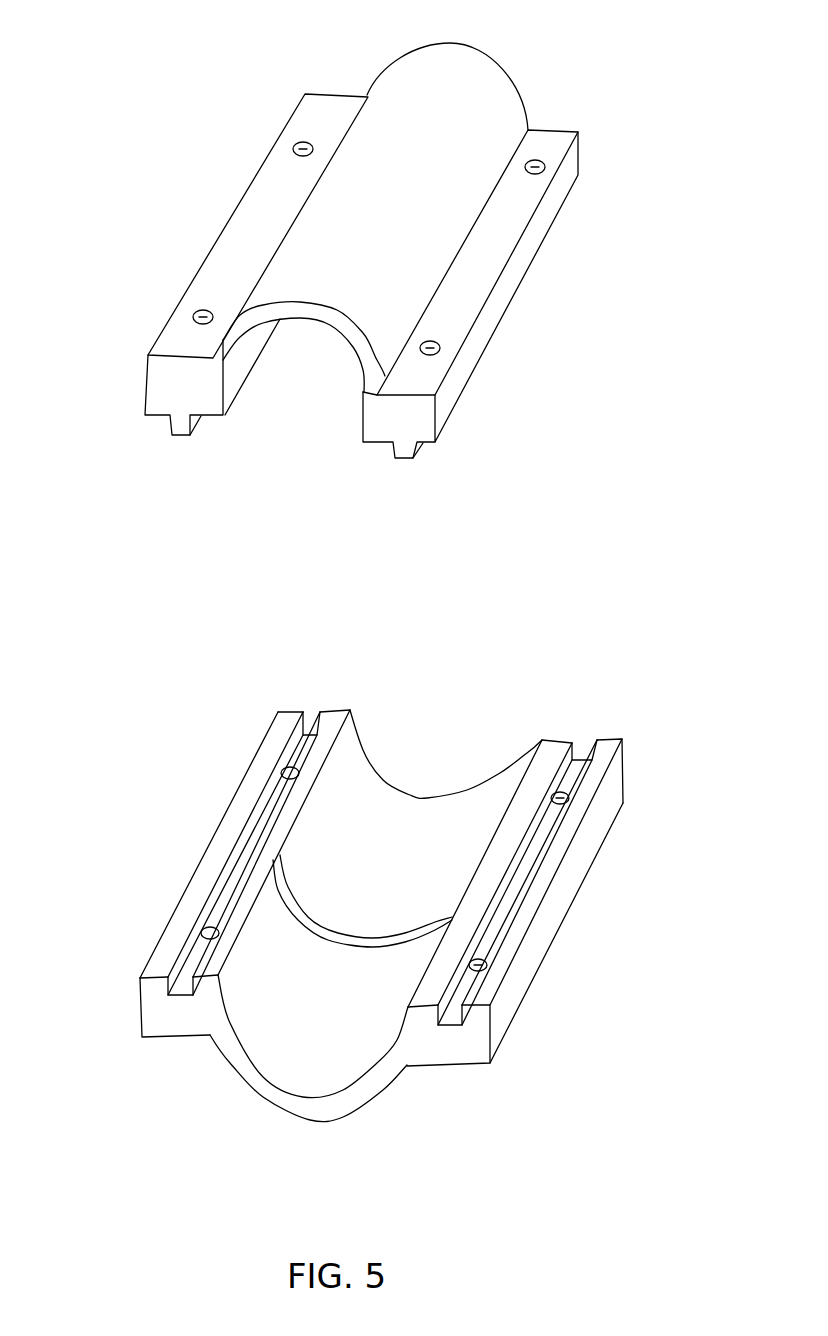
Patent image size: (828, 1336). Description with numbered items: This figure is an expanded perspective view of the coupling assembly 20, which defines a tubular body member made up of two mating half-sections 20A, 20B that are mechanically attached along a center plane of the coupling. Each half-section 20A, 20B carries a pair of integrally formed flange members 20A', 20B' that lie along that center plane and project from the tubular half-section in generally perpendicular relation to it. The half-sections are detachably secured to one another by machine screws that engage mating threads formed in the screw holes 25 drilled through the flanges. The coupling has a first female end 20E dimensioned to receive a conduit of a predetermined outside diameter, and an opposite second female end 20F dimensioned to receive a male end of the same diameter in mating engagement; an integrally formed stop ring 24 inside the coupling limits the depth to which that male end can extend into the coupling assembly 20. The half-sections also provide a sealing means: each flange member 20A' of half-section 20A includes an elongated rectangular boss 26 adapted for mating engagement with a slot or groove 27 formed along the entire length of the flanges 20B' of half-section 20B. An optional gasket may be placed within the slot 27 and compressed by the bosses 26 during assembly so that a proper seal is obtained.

The coupling assembly 20 is at (345, 263).
The half-section 20A is at (345, 271).
The flange member 20A' is at (342, 276).
The half-section 20B is at (362, 901).
The flange member 20B' is at (362, 859).
The first female end 20E is at (297, 1058).
The second female end 20F is at (363, 830).
The stop ring 24 is at (320, 922).
The screw holes 25 is at (547, 170).
The elongated rectangular boss 26 is at (182, 431).
The slot or groove 27 is at (312, 718).